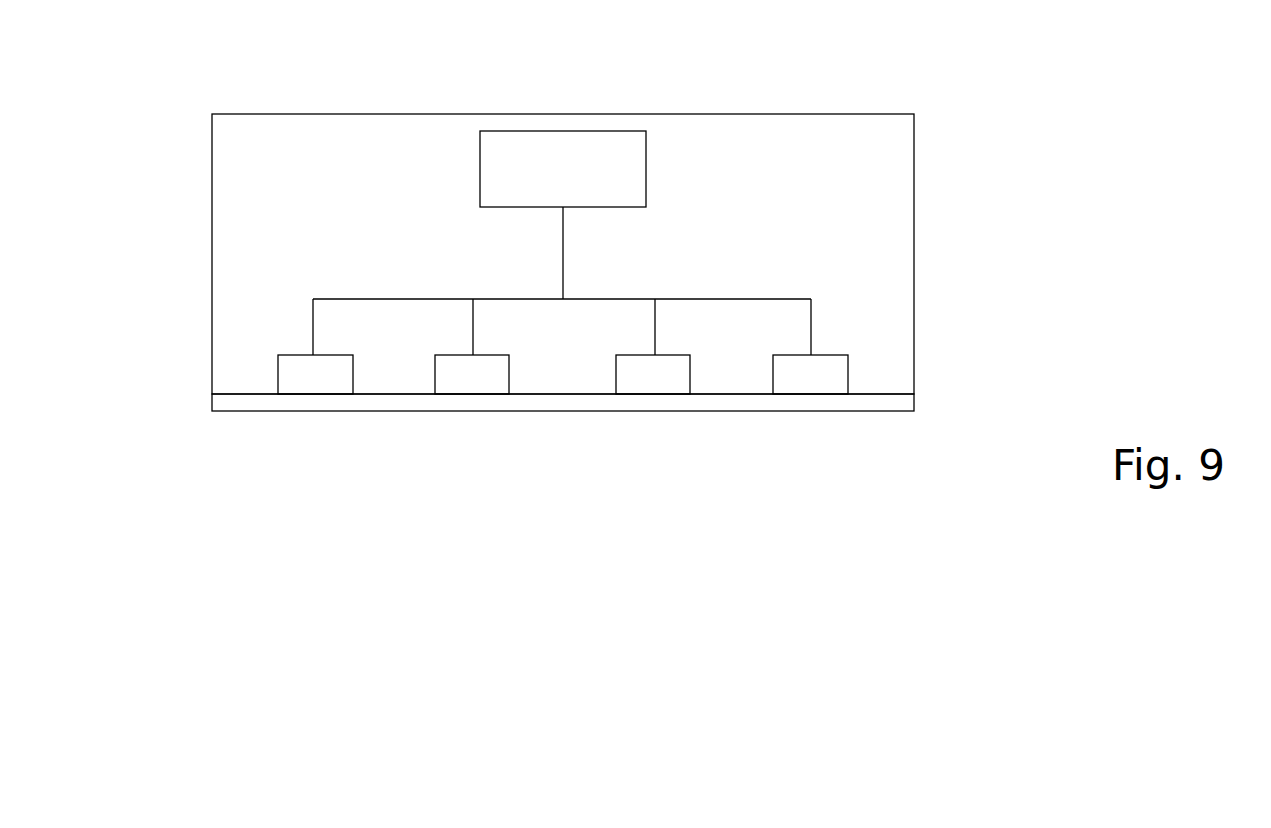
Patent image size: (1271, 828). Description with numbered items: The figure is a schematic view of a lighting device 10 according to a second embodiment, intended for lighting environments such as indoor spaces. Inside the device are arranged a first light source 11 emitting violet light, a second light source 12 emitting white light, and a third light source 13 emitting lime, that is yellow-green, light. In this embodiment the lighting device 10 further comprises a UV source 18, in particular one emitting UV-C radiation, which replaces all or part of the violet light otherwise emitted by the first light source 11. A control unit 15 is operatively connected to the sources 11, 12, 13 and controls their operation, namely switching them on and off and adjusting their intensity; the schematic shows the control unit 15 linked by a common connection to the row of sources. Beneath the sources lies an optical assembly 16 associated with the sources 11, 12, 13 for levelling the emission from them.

The lighting device 10 is at (1058, 176).
The first light source 11 is at (308, 375).
The second light source 12 is at (473, 375).
The third light source 13 is at (660, 387).
The control unit 15 is at (542, 147).
The optical assembly 16 is at (902, 406).
The UV source 18 is at (814, 382).